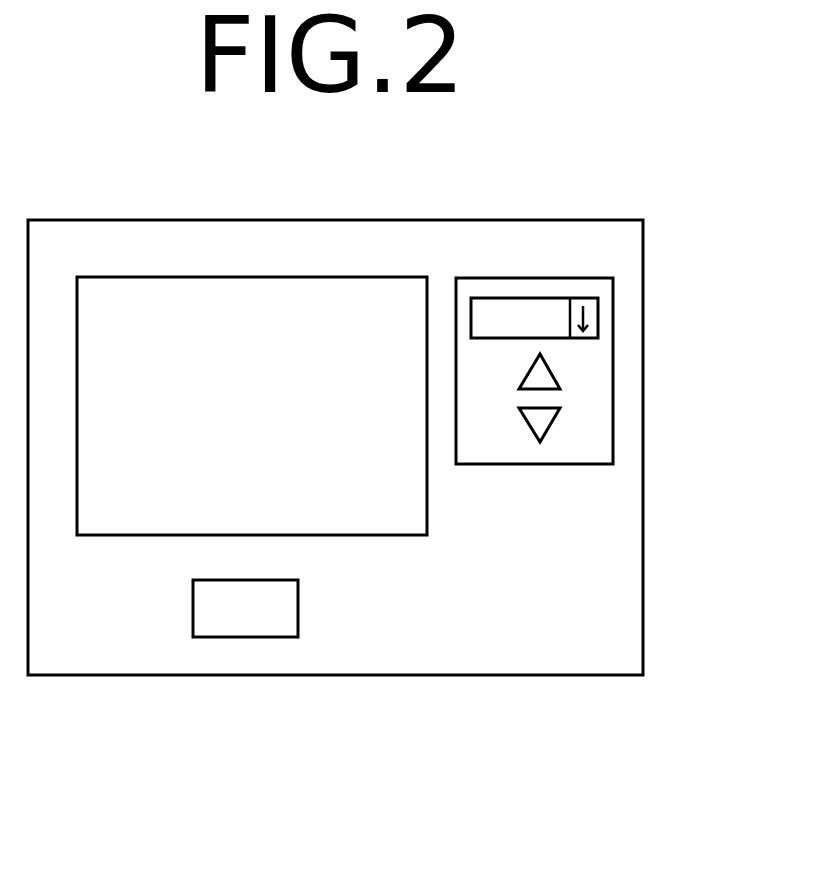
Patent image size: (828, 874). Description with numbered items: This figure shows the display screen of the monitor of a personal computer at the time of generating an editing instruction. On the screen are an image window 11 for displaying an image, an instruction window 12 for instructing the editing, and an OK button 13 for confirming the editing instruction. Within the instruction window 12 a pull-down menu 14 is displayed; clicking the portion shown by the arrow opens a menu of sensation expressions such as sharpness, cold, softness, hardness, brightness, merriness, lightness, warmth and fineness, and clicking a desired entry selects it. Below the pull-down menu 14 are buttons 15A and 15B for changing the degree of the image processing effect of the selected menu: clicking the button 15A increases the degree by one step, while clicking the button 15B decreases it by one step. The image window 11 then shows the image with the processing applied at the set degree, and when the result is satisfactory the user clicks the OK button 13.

The image window 11 is at (328, 276).
The instruction window 12 is at (567, 277).
The OK button 13 is at (298, 617).
The pull-down menu 14 is at (598, 306).
The button 15A is at (551, 370).
The button 15B is at (556, 416).